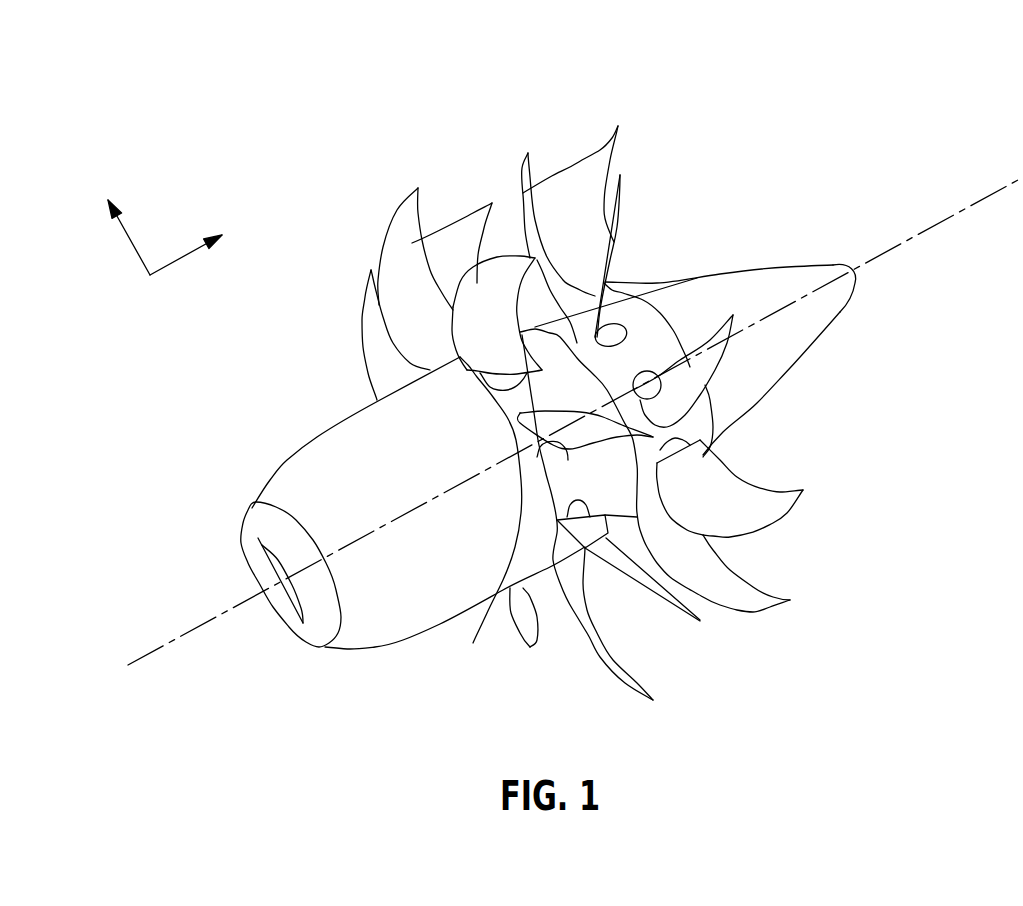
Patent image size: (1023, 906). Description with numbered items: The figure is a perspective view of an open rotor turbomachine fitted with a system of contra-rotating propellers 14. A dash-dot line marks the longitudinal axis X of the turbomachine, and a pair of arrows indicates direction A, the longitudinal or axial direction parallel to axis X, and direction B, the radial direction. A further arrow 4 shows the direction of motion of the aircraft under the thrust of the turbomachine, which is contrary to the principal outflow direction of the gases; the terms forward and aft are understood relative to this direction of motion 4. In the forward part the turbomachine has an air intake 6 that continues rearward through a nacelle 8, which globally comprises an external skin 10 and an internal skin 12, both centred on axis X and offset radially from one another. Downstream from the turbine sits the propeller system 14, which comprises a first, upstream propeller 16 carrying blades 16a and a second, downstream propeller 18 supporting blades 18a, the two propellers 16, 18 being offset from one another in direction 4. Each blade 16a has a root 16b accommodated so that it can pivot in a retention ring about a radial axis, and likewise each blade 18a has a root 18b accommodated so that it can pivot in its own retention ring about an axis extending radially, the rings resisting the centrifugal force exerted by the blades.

The direction of motion 4 is at (742, 92).
The air intake 6 is at (252, 553).
The nacelle 8 is at (287, 460).
The external skin 10 is at (317, 437).
The internal skin 12 is at (268, 606).
The system of contra-rotating propellers 14 is at (462, 135).
The first propeller 16 is at (393, 160).
The blade 16a is at (461, 224).
The root 16b is at (482, 516).
The second propeller 18 is at (528, 140).
The blade 18a is at (579, 141).
The root 18b is at (697, 278).
The longitudinal axis X is at (938, 225).
The longitudinal direction A is at (187, 258).
The radial direction B is at (132, 235).